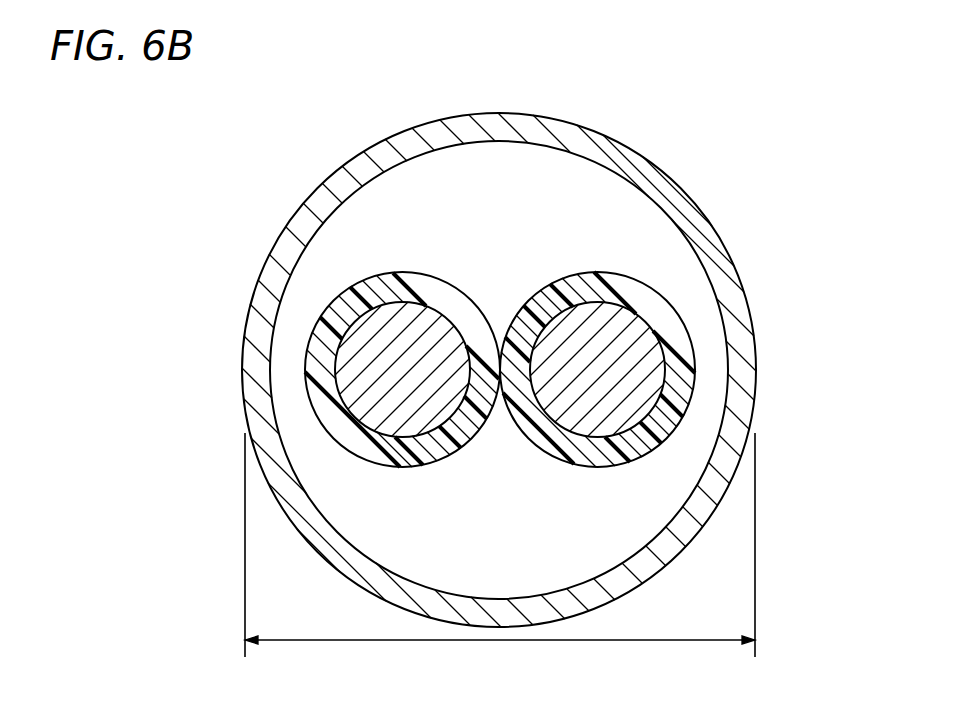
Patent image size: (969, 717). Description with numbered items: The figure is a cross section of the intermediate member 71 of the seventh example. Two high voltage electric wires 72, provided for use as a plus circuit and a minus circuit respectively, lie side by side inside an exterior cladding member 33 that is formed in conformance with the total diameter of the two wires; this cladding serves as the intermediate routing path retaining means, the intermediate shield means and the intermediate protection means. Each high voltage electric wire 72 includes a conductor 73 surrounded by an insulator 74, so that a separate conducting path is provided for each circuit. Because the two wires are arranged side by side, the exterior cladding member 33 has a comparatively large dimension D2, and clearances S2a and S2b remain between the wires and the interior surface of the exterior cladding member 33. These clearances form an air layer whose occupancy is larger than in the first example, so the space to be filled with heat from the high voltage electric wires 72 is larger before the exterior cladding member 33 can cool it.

The intermediate member 71 is at (273, 204).
The exterior cladding member 33 is at (702, 243).
The high voltage electric wire 72 is at (180, 322).
The conductor 73 is at (340, 337).
The insulator 74 is at (320, 354).
The clearance S2a is at (291, 419).
The clearance S2b is at (513, 208).
The diameter of exterior cladding member D2 is at (500, 545).